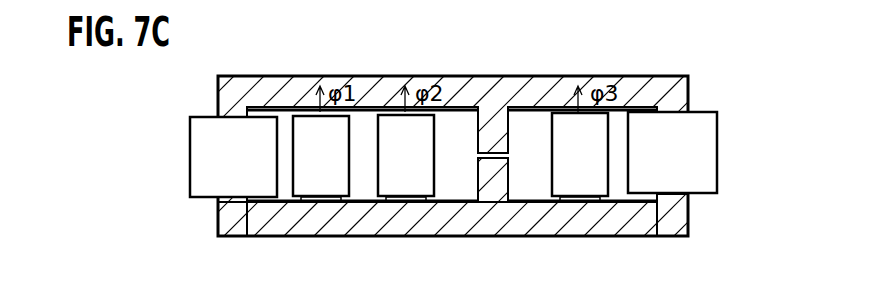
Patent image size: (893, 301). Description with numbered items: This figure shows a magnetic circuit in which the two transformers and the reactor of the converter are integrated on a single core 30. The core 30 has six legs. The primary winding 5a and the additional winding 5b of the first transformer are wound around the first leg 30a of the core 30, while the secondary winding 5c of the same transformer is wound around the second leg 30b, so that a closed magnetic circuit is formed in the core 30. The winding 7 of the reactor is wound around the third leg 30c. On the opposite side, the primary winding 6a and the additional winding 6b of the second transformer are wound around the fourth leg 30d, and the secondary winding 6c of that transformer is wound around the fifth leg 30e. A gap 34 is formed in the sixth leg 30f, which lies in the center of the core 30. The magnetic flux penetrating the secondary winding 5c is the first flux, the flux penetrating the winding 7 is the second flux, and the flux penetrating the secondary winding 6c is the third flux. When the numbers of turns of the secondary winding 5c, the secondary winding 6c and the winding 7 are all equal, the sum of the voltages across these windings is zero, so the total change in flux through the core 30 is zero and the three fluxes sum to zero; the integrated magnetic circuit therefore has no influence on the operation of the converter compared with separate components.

The core 30 is at (499, 75).
The first leg 30a is at (216, 205).
The second leg 30b is at (346, 203).
The third leg 30c is at (424, 200).
The fourth leg 30d is at (689, 198).
The fifth leg 30e is at (600, 203).
The sixth leg 30f is at (510, 171).
The gap 34 is at (510, 153).
The primary winding 5a is at (182, 157).
The additional winding 5b is at (190, 157).
The secondary winding 5c is at (292, 128).
The primary winding 6a is at (721, 152).
The additional winding 6b is at (718, 148).
The secondary winding 6c is at (611, 129).
The winding 7 is at (435, 150).